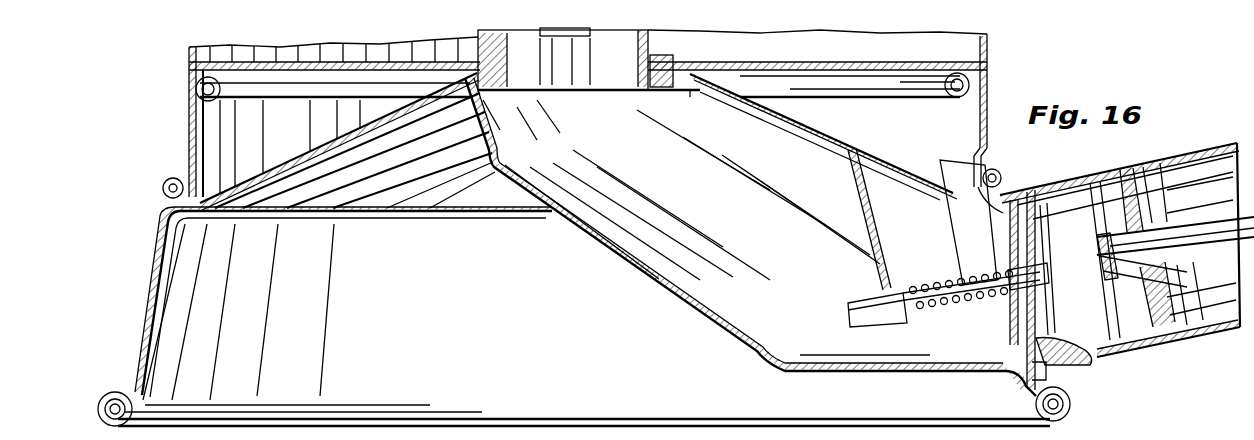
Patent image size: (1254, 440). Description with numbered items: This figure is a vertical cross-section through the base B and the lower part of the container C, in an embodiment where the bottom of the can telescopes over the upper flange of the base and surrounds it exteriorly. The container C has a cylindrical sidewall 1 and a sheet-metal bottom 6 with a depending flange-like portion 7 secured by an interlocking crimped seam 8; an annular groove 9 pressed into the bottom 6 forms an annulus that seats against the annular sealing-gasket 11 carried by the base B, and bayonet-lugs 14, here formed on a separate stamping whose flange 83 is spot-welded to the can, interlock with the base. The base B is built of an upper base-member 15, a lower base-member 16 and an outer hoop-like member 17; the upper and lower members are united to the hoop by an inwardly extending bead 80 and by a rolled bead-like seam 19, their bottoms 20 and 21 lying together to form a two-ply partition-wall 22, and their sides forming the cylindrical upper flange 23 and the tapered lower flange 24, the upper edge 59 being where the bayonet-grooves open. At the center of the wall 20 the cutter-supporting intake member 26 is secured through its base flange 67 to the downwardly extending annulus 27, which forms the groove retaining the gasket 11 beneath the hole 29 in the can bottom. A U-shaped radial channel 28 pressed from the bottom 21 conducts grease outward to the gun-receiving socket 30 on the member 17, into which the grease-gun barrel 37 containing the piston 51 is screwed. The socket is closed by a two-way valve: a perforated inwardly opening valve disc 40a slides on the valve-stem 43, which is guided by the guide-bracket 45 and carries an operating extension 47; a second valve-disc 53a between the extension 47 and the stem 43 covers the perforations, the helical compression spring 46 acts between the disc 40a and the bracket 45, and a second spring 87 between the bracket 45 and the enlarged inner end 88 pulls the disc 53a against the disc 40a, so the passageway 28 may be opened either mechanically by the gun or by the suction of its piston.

The cylindrical sidewall 1 is at (990, 43).
The bottom 6 is at (860, 62).
The flange-like portion 7 is at (988, 84).
The interlocking crimped seam 8 is at (160, 188).
The annular groove 9 is at (495, 58).
The annular sealing-gasket 11 is at (680, 96).
The bayonet-lug 14 is at (988, 155).
The upper base-member 15 is at (324, 131).
The lower base-member 16 is at (438, 330).
The outer hoop-like member 17 is at (1040, 380).
The rolled bead-like seam 19 is at (105, 392).
The bottom of upper member 20 is at (320, 132).
The bottom of lower member 21 is at (322, 160).
The two-ply partition-wall 22 is at (388, 137).
The upper flange 23 is at (200, 160).
The lower flange 24 is at (158, 305).
The cutter-supporting intake member 26 is at (589, 59).
The downwardly extending annulus 27 is at (660, 92).
The radial channel 28 is at (730, 206).
The hole 29 is at (505, 50).
The gun-receiving socket 30 is at (1078, 360).
The grease-gun barrel 37 is at (1176, 338).
The inwardly opening valve disc 40a is at (1012, 342).
The valve-stem 43 is at (952, 302).
The guide-bracket 45 is at (945, 218).
The helical compression spring 46 is at (982, 298).
The operating extension 47 is at (1050, 280).
The piston 51 is at (1112, 180).
The second valve-disc 53a is at (1045, 312).
The upper edge 59 is at (760, 66).
The base flange 67 is at (640, 92).
The inwardly extending bead 80 is at (288, 82).
The flange of stamping 83 is at (160, 70).
The second spring 87 is at (918, 293).
The enlarged inner end 88 is at (846, 310).
The base B is at (596, 331).
The container C is at (182, 46).